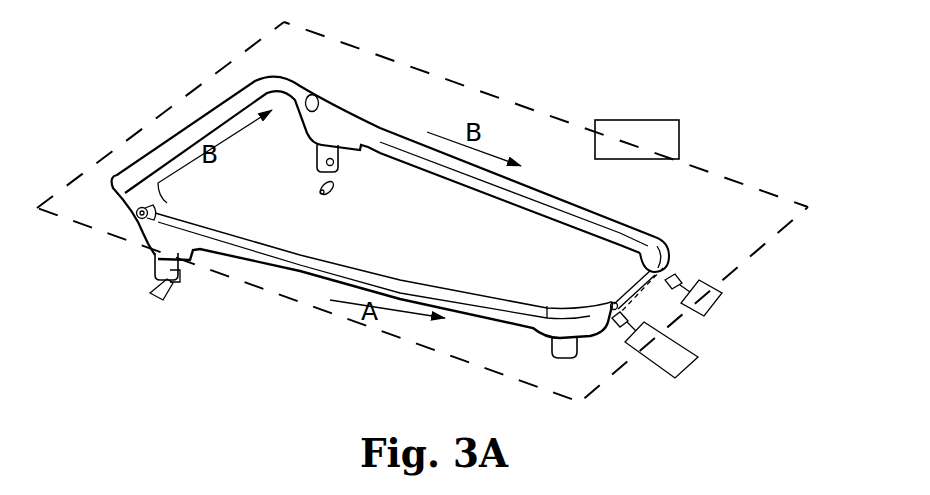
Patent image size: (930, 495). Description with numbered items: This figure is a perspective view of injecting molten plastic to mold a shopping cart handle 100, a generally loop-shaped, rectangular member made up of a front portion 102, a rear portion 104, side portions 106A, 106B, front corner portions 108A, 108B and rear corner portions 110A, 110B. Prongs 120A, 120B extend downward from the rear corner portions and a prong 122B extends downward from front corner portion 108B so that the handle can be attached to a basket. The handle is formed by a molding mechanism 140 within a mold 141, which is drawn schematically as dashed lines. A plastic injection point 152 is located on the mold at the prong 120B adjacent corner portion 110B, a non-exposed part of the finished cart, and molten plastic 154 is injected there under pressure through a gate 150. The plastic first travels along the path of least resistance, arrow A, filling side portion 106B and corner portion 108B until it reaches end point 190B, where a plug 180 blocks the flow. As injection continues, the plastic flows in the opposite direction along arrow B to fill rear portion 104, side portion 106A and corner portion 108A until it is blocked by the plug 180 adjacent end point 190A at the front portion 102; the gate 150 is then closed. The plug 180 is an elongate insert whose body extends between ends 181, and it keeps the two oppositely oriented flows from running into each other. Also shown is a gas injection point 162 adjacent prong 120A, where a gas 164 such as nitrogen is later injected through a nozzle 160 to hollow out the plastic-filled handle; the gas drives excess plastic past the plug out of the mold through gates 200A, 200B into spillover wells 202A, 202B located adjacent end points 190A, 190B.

The handle 100 is at (530, 138).
The front portion 102 is at (637, 267).
The rear portion 104 is at (173, 116).
The side portion 106A is at (540, 208).
The side portion 106B is at (377, 273).
The front corner portion 108A is at (662, 258).
The front corner portion 108B is at (548, 310).
The rear corner portion 110A is at (345, 123).
The rear corner portion 110B is at (173, 232).
The prong 120A is at (315, 155).
The prong 120B is at (157, 258).
The prong 122B is at (563, 355).
The molding mechanism 140 is at (645, 118).
The mold 141 is at (422, 73).
The gate 150 is at (168, 296).
The plastic injection point 152 is at (182, 273).
The molten plastic 154 is at (152, 303).
The nozzle 160 is at (335, 190).
The gas injection point 162 is at (340, 160).
The gas 164 is at (313, 200).
The plug 180 is at (635, 286).
The ends 181 is at (645, 286).
The end point 190A is at (663, 242).
The end point 190B is at (605, 303).
The gate 200A is at (678, 275).
The gate 200B is at (606, 322).
The spillover well 202A is at (712, 306).
The spillover well 202B is at (682, 363).